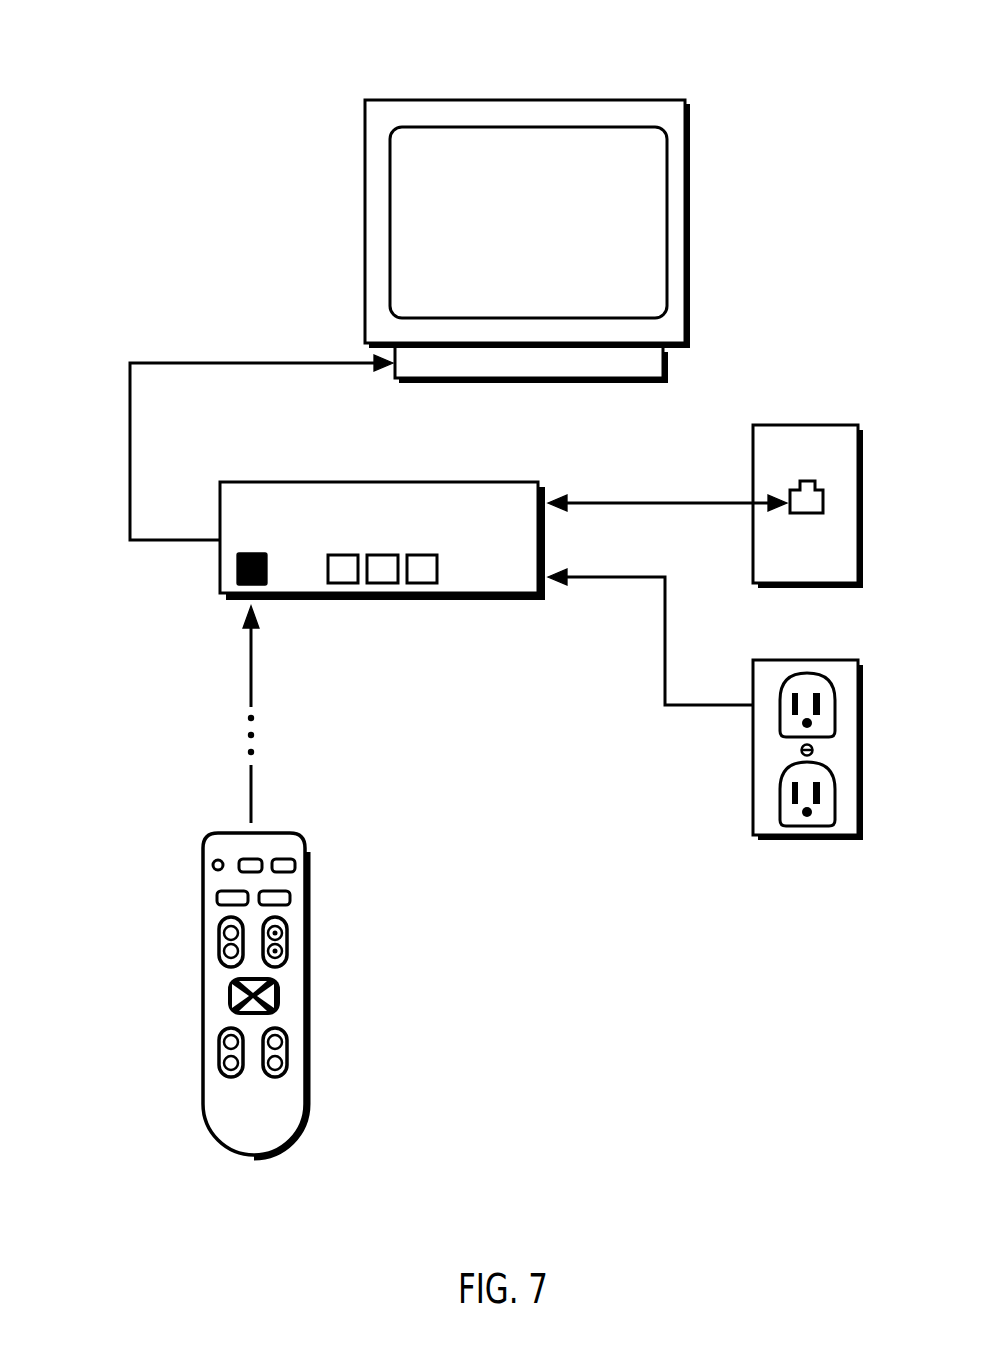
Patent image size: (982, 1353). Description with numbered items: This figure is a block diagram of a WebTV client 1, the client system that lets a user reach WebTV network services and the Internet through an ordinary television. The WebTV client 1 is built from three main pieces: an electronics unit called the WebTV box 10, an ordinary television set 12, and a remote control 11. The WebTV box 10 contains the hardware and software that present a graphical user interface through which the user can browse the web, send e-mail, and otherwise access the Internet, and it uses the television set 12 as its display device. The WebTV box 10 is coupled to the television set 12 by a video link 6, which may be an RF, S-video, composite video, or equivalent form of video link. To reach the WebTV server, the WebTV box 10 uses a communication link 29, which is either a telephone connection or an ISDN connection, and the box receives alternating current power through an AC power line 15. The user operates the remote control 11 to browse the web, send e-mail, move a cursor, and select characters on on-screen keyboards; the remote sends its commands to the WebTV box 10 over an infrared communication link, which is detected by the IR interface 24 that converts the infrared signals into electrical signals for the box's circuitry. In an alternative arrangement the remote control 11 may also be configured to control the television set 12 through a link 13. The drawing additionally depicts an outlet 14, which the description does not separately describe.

The WebTV client 1 is at (849, 48).
The video link 6 is at (128, 448).
The WebTV box 10 is at (382, 560).
The remote control 11 is at (268, 1134).
The television set 12 is at (645, 303).
The link 13 is at (853, 577).
The AC power outlet 14 is at (851, 757).
The AC power line 15 is at (663, 641).
The IR interface 24 is at (266, 573).
The communication link 29 is at (668, 504).